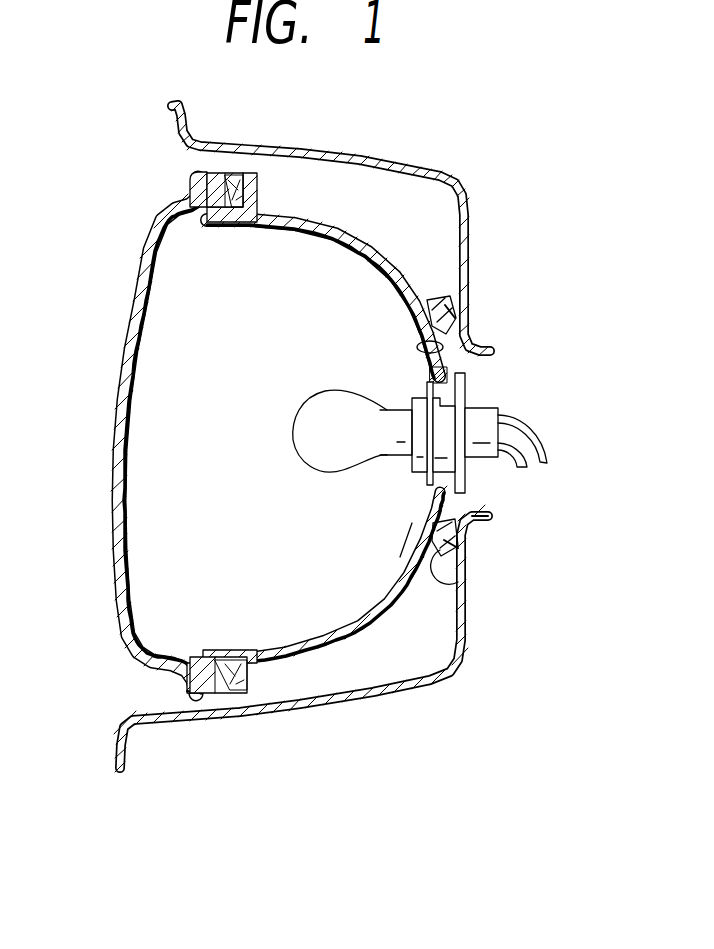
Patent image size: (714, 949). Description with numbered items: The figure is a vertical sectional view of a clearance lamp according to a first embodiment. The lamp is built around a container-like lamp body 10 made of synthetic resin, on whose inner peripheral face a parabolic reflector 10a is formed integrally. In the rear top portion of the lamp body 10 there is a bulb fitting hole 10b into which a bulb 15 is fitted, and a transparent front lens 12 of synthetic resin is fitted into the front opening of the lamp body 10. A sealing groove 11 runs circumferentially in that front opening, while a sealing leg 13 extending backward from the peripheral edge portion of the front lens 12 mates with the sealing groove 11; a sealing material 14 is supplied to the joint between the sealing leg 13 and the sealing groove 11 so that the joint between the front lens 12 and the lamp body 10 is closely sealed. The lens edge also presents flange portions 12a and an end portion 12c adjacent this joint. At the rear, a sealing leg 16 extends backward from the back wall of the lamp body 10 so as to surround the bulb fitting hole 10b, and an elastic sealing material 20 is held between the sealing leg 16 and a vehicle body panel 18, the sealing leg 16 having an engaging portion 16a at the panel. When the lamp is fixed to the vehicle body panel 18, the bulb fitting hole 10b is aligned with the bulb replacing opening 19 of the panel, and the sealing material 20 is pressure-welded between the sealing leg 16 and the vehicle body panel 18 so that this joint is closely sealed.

The lamp body 10 is at (388, 250).
The parabolic reflector 10a is at (467, 353).
The bulb fitting hole 10b is at (455, 403).
The sealing groove 11 is at (228, 172).
The front lens 12 is at (120, 372).
The lens flange 12a is at (190, 194).
The lens flange end 12c is at (187, 700).
The sealing leg 13 is at (246, 175).
The sealing material 14 is at (258, 202).
The bulb 15 is at (288, 442).
The sealing leg 16 is at (437, 298).
The clip engaging portion 16a is at (457, 303).
The vehicle body panel 18 is at (362, 152).
The bulb replacing opening 19 is at (478, 510).
The sealing material 20 is at (447, 300).